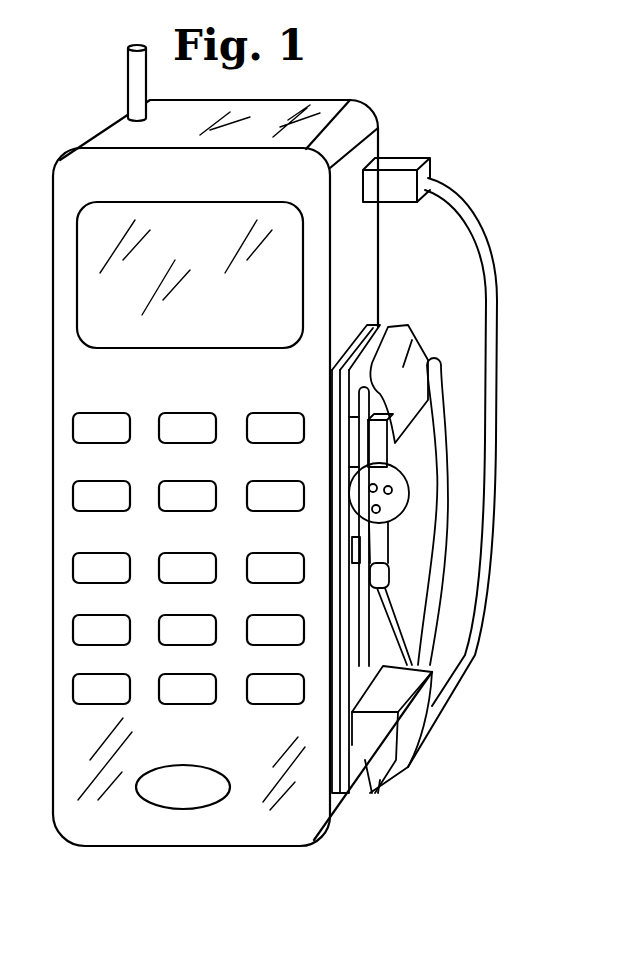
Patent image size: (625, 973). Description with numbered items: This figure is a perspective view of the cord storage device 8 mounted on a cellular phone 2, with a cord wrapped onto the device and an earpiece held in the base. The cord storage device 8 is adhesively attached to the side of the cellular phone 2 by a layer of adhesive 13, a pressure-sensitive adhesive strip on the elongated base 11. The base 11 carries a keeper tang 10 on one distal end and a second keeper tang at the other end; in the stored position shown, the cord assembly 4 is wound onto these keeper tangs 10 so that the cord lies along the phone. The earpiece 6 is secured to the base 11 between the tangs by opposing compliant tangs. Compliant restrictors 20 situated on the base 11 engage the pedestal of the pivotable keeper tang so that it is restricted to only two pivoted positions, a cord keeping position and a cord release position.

The cellular phone 2 is at (207, 860).
The cord assembly 4 is at (485, 222).
The earpiece 6 is at (405, 508).
The cord storage device 8 is at (408, 768).
The keeper tang 10 is at (413, 338).
The elongated base 11 is at (370, 782).
The layer of adhesive 13 is at (340, 795).
The compliant restrictors 20 is at (380, 440).